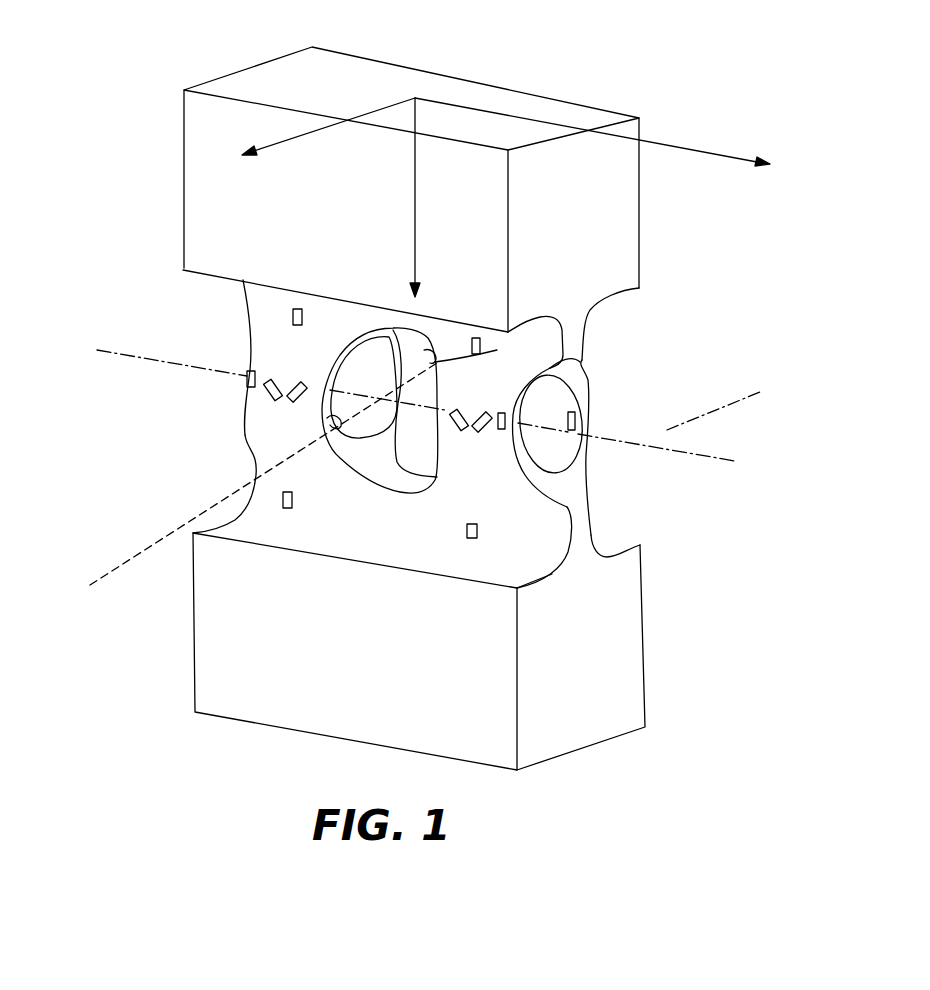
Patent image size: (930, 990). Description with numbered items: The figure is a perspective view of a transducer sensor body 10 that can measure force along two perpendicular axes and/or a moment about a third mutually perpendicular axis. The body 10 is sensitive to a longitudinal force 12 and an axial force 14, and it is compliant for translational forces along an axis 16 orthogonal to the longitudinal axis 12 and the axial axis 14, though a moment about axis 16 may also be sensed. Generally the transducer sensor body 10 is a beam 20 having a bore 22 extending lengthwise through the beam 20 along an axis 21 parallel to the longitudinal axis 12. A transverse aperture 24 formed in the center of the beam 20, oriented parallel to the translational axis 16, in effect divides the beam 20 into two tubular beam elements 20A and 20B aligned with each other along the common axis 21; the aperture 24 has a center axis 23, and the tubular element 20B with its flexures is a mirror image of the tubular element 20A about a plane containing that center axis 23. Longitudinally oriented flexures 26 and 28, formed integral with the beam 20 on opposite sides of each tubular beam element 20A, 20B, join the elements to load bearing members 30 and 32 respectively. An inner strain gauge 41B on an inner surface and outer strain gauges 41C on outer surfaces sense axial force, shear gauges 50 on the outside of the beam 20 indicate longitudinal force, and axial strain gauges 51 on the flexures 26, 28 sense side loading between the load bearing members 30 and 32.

The transducer sensor body 10 is at (690, 243).
The longitudinal force 12 is at (675, 143).
The axial force 14 is at (413, 225).
The axis 16 is at (318, 128).
The beam 20 is at (606, 403).
The tubular beam element 20A is at (232, 351).
The tubular beam element 20B is at (600, 465).
The axis 21 is at (729, 404).
The bore 22 is at (340, 418).
The center axis 23 is at (150, 547).
The transverse aperture 24 is at (494, 351).
The flexure 26 is at (245, 498).
The flexure 28 is at (243, 303).
The load bearing member 30 is at (640, 640).
The load bearing member 32 is at (636, 215).
The inner strain gauge 41B is at (578, 427).
The outer strain gauge 41C is at (247, 378).
The shear gauge 50 is at (250, 397).
The axial strain gauge 51 is at (293, 312).